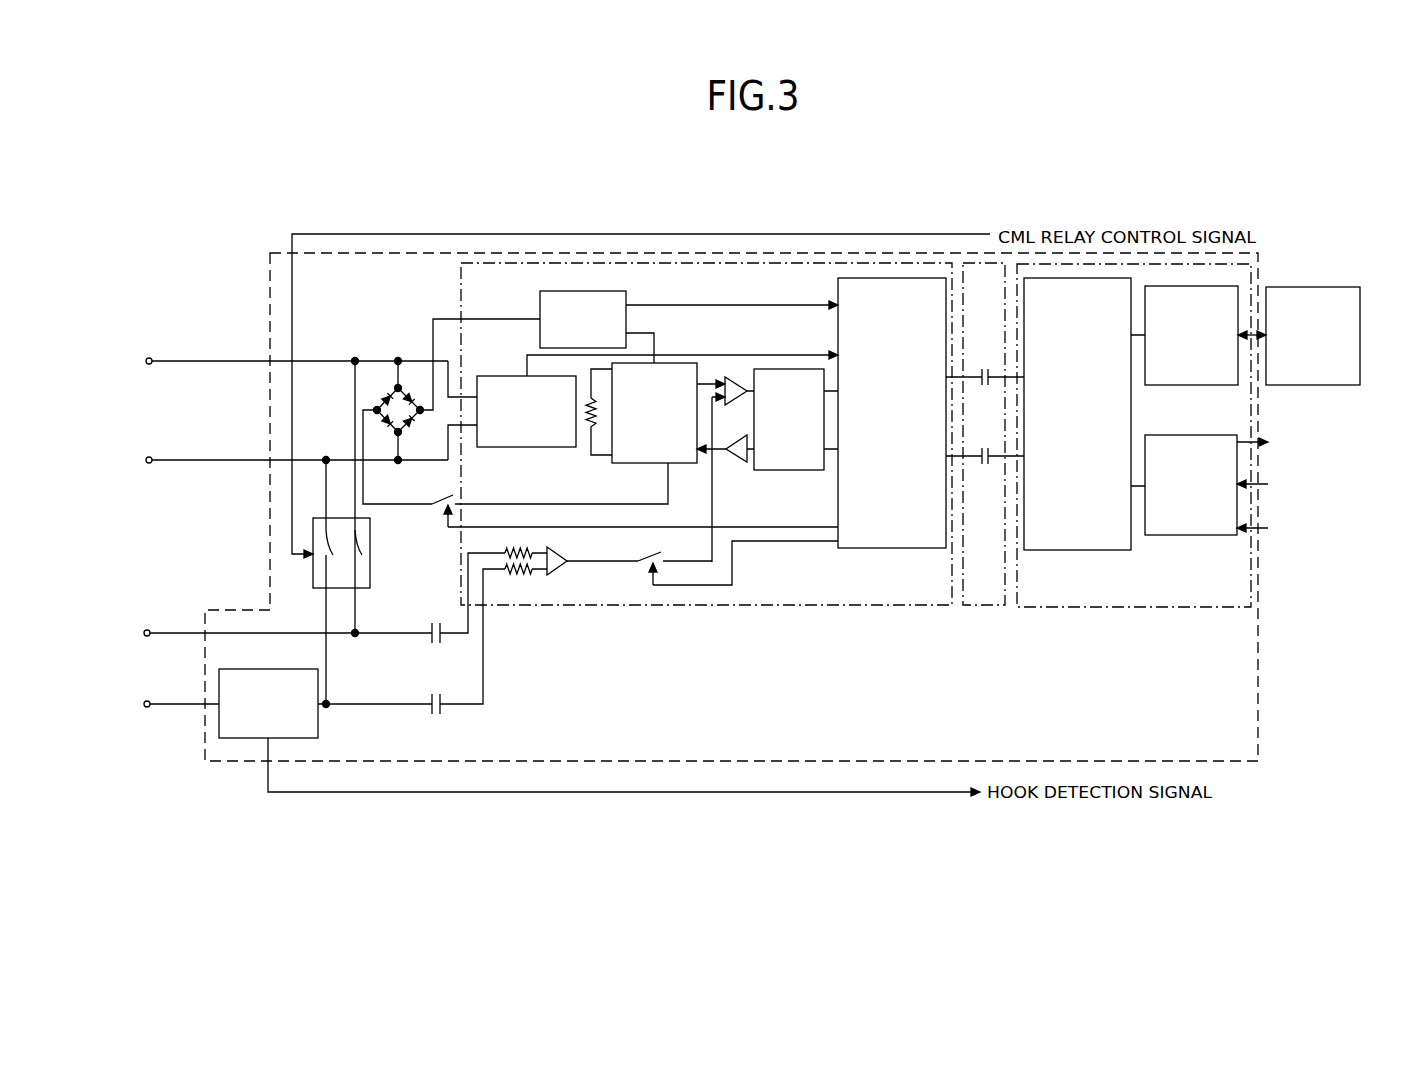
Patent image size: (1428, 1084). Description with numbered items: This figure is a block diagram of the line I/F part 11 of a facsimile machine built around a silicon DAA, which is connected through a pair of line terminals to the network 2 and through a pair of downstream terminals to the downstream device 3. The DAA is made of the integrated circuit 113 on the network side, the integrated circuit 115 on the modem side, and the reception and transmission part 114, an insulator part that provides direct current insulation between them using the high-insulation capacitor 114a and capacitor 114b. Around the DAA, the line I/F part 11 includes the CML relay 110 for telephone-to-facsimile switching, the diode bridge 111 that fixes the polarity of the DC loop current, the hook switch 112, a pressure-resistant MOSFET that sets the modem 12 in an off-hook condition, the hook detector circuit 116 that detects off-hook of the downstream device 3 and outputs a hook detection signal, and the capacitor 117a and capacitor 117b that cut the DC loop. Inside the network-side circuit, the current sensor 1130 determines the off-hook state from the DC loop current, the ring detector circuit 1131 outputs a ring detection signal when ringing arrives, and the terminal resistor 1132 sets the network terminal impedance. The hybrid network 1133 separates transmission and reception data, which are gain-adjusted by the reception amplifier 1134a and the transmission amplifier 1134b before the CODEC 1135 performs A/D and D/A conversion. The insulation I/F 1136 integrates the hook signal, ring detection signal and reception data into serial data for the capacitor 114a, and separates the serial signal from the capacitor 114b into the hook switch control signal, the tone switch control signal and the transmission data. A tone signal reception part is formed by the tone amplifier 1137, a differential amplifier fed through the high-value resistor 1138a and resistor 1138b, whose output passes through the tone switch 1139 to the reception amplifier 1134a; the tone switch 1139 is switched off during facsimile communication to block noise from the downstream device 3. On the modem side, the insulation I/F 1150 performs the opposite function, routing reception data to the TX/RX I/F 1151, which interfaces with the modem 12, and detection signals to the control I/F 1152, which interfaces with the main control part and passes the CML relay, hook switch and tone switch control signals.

The network 2 is at (144, 410).
The downstream device 3 is at (135, 668).
The line I/F part 11 is at (1258, 258).
The modem 12 is at (1313, 287).
The CML relay 110 is at (370, 574).
The diode bridge 111 is at (390, 397).
The hook switch 112 is at (442, 517).
The integrated circuit on the network side 113 is at (905, 607).
The reception and transmission part 114 is at (986, 607).
The integrated circuit on the modem side 115 is at (1136, 607).
The hook detector circuit 116 is at (319, 727).
The capacitor 117a is at (433, 624).
The capacitor 117b is at (433, 697).
The capacitor 114a is at (985, 368).
The capacitor 114b is at (984, 465).
The current sensor 1130 is at (540, 302).
The ring detector circuit 1131 is at (527, 448).
The terminal resistor 1132 is at (586, 447).
The hybrid network 1133 is at (652, 463).
The reception amplifier 1134a is at (734, 378).
The transmission amplifier 1134b is at (738, 462).
The CODEC 1135 is at (791, 470).
The insulation I/F 1136 is at (892, 548).
The tone amplifier 1137 is at (561, 571).
The resistor 1138a is at (516, 533).
The resistor 1138b is at (518, 575).
The tone switch 1139 is at (662, 556).
The insulation I/F 1150 is at (1075, 550).
The TX/RX I/F 1151 is at (1190, 385).
The control I/F 1152 is at (1190, 535).